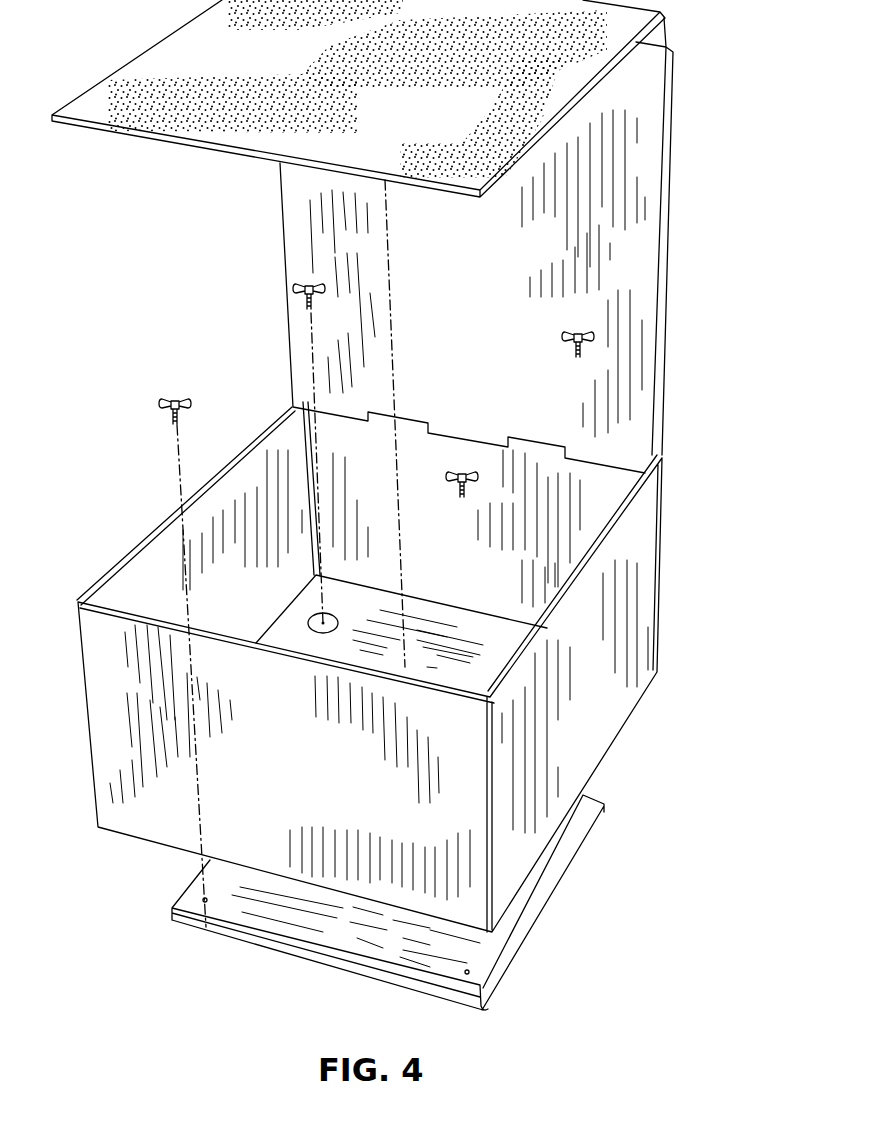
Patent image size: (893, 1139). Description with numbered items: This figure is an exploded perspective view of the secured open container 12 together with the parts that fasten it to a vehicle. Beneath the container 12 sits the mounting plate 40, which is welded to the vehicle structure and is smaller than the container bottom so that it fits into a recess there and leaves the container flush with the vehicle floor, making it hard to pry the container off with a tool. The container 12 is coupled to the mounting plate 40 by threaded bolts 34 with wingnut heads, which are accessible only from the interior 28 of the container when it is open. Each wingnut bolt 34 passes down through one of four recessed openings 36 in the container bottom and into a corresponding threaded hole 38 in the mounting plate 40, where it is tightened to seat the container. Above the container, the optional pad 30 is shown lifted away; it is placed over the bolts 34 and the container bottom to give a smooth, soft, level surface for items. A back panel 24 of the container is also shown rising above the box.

The container 12 is at (642, 608).
The back panel 24 is at (650, 145).
The interior 28 is at (228, 537).
The pad 30 is at (178, 63).
The wingnut bolt 34 is at (300, 283).
The recessed opening 36 is at (312, 634).
The threaded hole 38 is at (205, 900).
The mounting plate 40 is at (495, 942).